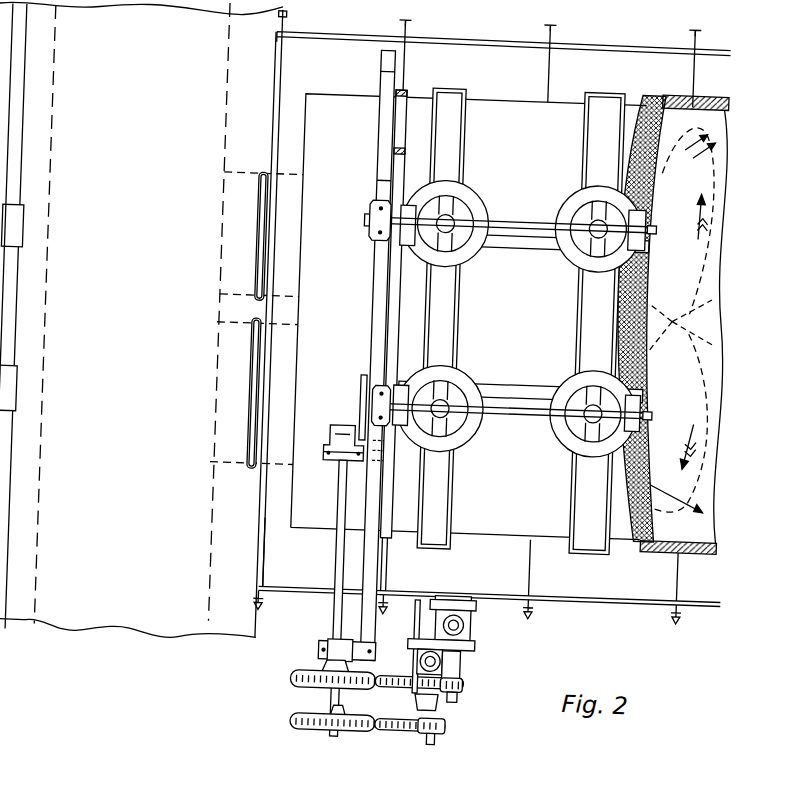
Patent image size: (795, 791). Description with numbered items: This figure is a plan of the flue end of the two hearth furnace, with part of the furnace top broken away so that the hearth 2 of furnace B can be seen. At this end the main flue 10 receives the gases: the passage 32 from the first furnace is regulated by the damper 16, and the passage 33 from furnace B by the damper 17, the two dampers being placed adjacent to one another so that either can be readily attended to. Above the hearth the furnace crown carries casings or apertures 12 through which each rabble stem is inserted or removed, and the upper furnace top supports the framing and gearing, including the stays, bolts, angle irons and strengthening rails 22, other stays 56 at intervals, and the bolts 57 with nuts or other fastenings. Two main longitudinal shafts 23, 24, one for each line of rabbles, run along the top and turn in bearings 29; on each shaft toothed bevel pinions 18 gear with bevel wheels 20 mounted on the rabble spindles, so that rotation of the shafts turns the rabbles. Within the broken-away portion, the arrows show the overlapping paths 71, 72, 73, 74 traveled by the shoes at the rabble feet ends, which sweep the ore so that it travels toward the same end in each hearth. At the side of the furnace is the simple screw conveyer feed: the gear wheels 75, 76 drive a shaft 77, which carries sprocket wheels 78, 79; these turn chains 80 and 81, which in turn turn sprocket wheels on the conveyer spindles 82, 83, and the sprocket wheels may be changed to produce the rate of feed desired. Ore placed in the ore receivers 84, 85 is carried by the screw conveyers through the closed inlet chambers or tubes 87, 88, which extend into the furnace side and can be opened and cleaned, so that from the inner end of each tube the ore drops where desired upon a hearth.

The longitudinal hearth 2 is at (686, 324).
The main flue 10 is at (141, 327).
The casing or aperture 12 is at (470, 137).
The damper 16 is at (263, 370).
The damper 17 is at (265, 232).
The toothed bevel pinion 18 is at (417, 236).
The bevel wheel 20 is at (478, 240).
The stays, bolts, angle irons and strengthening rails 22 is at (545, 232).
The main longitudinal shaft 23 is at (533, 398).
The main longitudinal shaft 24 is at (560, 206).
The bearing 29 is at (380, 222).
The passage 32 is at (255, 393).
The passage 33 is at (263, 234).
The stay 56 is at (558, 15).
The bolt 57 is at (277, 512).
The overlapping path 71 is at (713, 360).
The overlapping path 72 is at (714, 505).
The overlapping path 73 is at (685, 204).
The overlapping path 74 is at (692, 136).
The gear wheel 75 is at (374, 390).
The gear wheel 76 is at (345, 429).
The shaft 77 is at (355, 487).
The sprocket wheel 78 is at (314, 674).
The sprocket wheel 79 is at (315, 710).
The chain 80 is at (487, 676).
The chain 81 is at (471, 718).
The conveyer spindle 82 is at (456, 730).
The conveyer spindle 83 is at (483, 683).
The ore receiver 84 is at (484, 646).
The ore receiver 85 is at (492, 613).
The inlet chamber or tube 87 is at (436, 617).
The inlet chamber or tube 88 is at (488, 584).
The furnace B is at (473, 317).